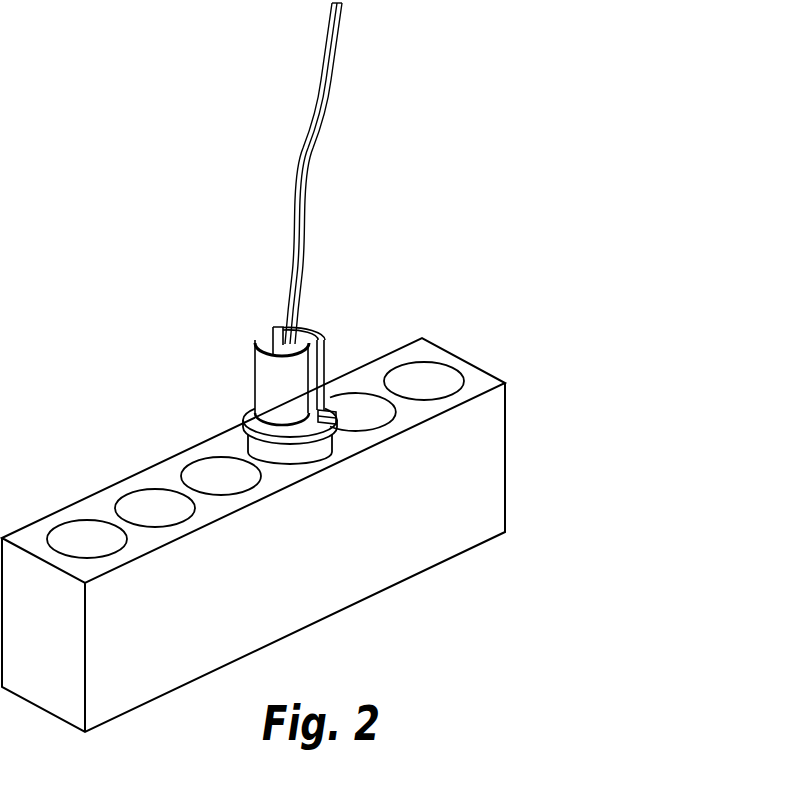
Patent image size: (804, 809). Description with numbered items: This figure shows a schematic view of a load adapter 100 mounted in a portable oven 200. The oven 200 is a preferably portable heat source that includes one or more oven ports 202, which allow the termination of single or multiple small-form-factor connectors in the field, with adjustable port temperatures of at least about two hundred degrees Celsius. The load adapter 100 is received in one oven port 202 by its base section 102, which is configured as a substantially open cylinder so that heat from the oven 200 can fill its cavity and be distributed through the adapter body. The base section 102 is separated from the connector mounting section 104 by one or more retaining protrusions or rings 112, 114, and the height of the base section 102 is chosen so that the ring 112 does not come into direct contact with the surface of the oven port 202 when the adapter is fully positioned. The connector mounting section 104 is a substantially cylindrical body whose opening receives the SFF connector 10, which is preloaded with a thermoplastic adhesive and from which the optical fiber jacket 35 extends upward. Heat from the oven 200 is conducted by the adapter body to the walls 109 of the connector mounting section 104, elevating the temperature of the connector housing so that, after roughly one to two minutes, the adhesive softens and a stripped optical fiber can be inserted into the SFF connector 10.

The SFF connector 10 is at (320, 336).
The optical fiber jacket 35 is at (333, 101).
The load adapter 100 is at (302, 363).
The base section 102 is at (248, 447).
The connector mounting section 104 is at (278, 317).
The wall of connector mounting section 109 is at (268, 389).
The retaining ring 112 is at (330, 425).
The retaining ring 114 is at (403, 362).
The oven 200 is at (82, 490).
The oven port 202 is at (147, 500).